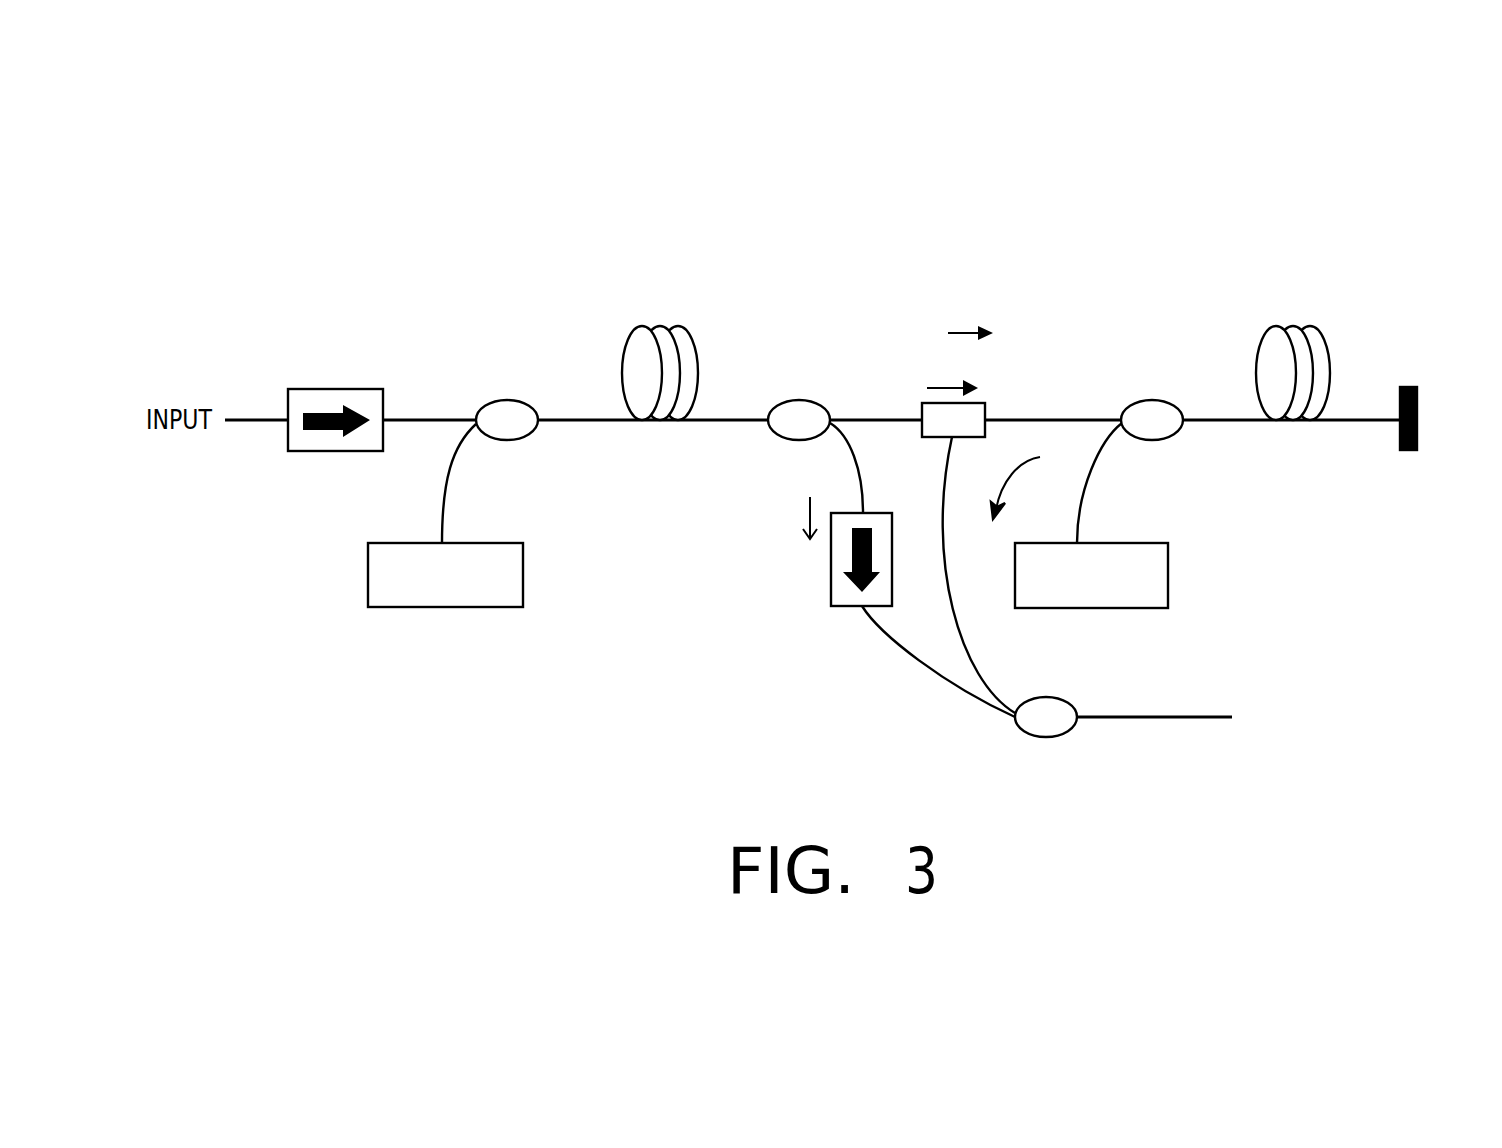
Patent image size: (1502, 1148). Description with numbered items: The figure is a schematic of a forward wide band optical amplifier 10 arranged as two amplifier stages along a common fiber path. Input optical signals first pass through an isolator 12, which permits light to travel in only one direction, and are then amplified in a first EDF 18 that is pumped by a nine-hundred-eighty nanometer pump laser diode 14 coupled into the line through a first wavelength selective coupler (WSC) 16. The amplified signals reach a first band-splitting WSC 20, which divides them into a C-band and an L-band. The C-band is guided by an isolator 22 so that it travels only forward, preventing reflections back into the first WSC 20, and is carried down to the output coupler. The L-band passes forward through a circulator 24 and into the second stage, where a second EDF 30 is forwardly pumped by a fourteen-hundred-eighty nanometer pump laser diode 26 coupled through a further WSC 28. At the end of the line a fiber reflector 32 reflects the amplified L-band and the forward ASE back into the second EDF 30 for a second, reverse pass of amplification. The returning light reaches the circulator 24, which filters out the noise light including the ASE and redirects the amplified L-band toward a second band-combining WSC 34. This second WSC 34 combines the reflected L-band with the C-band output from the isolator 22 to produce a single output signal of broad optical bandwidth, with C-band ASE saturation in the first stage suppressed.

The wide band optical amplifier 10 is at (1202, 261).
The isolator 12 is at (337, 451).
The 980 nm pump laser diode 14 is at (523, 575).
The 980/1550 nm WSC 16 is at (523, 437).
The first EDF 18 is at (690, 417).
The first 1550/1590 nm WSC 20 is at (790, 440).
The isolator 22 is at (847, 606).
The circulator 24 is at (940, 437).
The 1480 nm pump laser diode 26 is at (1168, 573).
The 1480/1550 nm WSC 28 is at (1153, 440).
The second EDF 30 is at (1323, 407).
The fiber reflector 32 is at (1417, 418).
The second 1550/1590 nm WSC 34 is at (1048, 737).